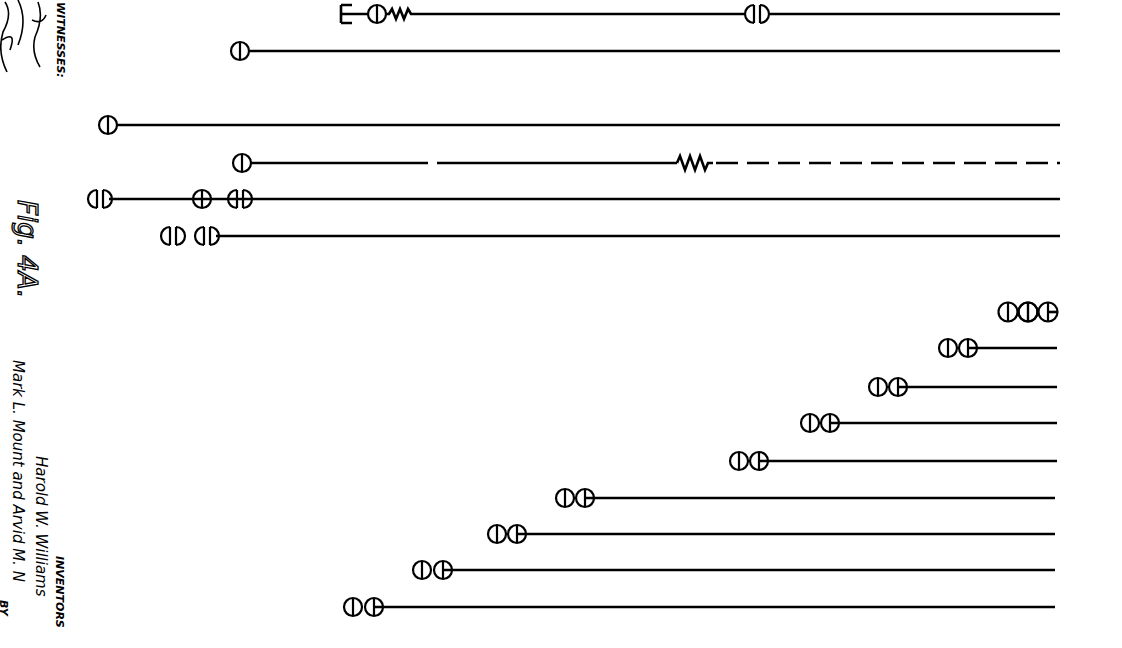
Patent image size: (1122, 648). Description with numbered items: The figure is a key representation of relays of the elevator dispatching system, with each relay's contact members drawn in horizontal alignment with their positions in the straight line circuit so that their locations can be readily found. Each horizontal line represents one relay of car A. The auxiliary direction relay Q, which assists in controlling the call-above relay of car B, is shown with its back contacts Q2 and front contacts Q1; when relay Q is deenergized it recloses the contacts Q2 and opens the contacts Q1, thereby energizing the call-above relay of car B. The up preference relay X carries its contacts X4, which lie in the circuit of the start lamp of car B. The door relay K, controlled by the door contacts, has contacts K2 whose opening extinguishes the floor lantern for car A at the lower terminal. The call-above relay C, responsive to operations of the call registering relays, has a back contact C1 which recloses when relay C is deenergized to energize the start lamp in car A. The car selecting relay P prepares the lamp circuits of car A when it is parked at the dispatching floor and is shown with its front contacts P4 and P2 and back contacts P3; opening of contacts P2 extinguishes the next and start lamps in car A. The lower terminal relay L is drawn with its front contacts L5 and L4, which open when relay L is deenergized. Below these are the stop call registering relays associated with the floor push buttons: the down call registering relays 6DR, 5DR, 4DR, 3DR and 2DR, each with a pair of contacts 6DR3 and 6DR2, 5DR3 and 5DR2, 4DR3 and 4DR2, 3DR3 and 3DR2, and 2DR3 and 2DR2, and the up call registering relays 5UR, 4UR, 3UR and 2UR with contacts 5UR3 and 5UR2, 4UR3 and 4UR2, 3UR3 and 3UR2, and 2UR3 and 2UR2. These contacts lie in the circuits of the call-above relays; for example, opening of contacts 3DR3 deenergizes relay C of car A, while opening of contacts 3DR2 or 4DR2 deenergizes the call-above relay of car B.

The auxiliary direction relay Q is at (713, 15).
The front contacts of auxiliary direction relay Q1 is at (748, 18).
The back contacts of auxiliary direction relay Q2 is at (384, 21).
The up preference relay X is at (668, 51).
The contacts of up preference relay X4 is at (230, 50).
The door relay K is at (601, 125).
The contacts of door relay K2 is at (99, 125).
The call above relay C is at (668, 169).
The back contact of call above relay C1 is at (233, 163).
The car selecting relay P is at (596, 199).
The front contacts of car selecting relay P4 is at (82, 199).
The back contacts of car selecting relay P3 is at (196, 192).
The front contacts of car selecting relay P2 is at (248, 195).
The lower terminal relay L is at (650, 237).
The front contacts of lower terminal relay L5 is at (162, 236).
The front contacts of lower terminal relay L4 is at (218, 244).
The down call registering relay for sixth floor 6DR is at (1076, 312).
The contacts of sixth floor down call registering relay 6DR3 is at (1005, 312).
The contacts of sixth floor down call registering relay 6DR2 is at (1039, 303).
The down call registering relay for fifth floor 5DR is at (1036, 348).
The contacts of fifth floor down call registering relay 5DR3 is at (937, 348).
The contacts of fifth floor down call registering relay 5DR2 is at (975, 339).
The down call registering relay for fourth floor 4DR is at (1001, 387).
The contacts of fourth floor down call registering relay 4DR3 is at (867, 387).
The contacts of fourth floor down call registering relay 4DR2 is at (910, 378).
The down call registering relay for third floor 3DR is at (967, 423).
The contacts of third floor down call registering relay 3DR3 is at (800, 423).
The contacts of third floor down call registering relay 3DR2 is at (843, 405).
The down call registering relay for second floor 2DR is at (931, 461).
The contacts of second floor down call registering relay 2DR3 is at (729, 461).
The contacts of second floor down call registering relay 2DR2 is at (764, 452).
The up call registering relay for fifth floor 5UR is at (844, 498).
The contacts of fifth floor up call registering relay 5UR3 is at (555, 498).
The contacts of fifth floor up call registering relay 5UR2 is at (611, 480).
The up call registering relay for fourth floor 4UR is at (810, 534).
The contacts of fourth floor up call registering relay 4UR3 is at (487, 534).
The contacts of fourth floor up call registering relay 4UR2 is at (525, 516).
The up call registering relay for third floor 3UR is at (773, 570).
The contacts of third floor up call registering relay 3UR3 is at (412, 570).
The contacts of third floor up call registering relay 3UR2 is at (452, 552).
The up call registering relay for second floor 2UR is at (738, 607).
The contacts of second floor up call registering relay 2UR3 is at (343, 607).
The contacts of second floor up call registering relay 2UR2 is at (383, 589).